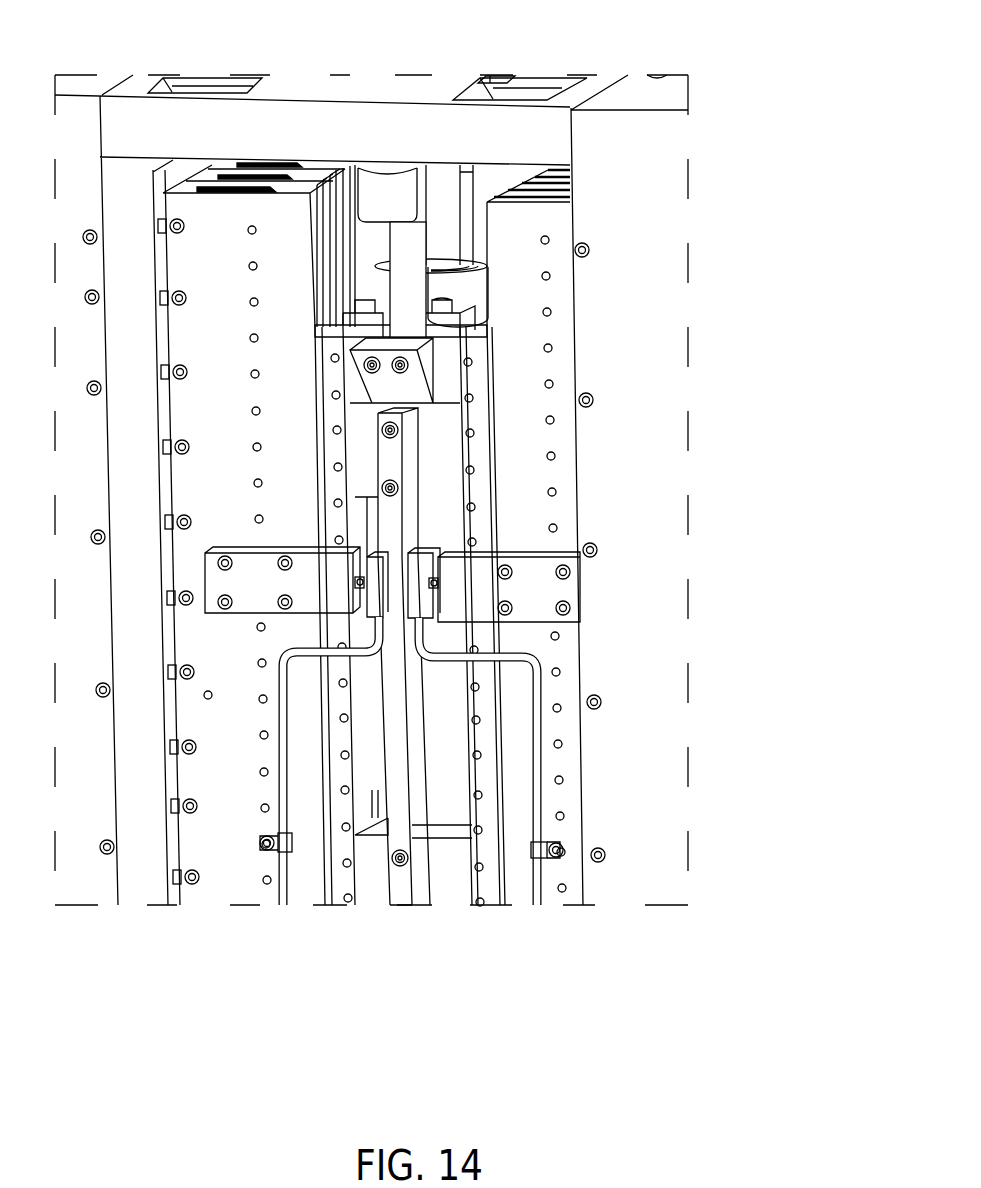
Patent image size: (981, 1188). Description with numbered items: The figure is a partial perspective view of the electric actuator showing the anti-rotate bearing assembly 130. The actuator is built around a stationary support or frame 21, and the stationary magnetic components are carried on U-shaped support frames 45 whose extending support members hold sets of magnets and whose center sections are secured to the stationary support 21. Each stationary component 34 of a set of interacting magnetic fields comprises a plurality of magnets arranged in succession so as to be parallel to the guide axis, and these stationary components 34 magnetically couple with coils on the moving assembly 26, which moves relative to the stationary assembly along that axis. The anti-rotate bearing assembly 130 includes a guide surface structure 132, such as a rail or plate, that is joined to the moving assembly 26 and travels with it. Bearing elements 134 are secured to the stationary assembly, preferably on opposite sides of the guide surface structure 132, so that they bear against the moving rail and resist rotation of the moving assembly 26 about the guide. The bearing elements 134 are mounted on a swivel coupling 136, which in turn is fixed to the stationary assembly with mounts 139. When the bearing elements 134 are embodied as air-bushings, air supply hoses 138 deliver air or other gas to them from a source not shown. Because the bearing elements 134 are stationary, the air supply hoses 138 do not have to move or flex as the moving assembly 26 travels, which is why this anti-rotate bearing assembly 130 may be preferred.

The stationary support 21 is at (198, 74).
The U-shaped support frame 45 is at (288, 223).
The moving assembly 26 is at (465, 300).
The stationary component 34 is at (556, 231).
The guide surface structure 132 is at (397, 455).
The bearing elements 134 is at (432, 560).
The swivel coupling 136 is at (438, 583).
The mounts 139 is at (540, 590).
The anti-rotate bearing assembly 130 is at (395, 645).
The air supply hoses 138 is at (288, 865).